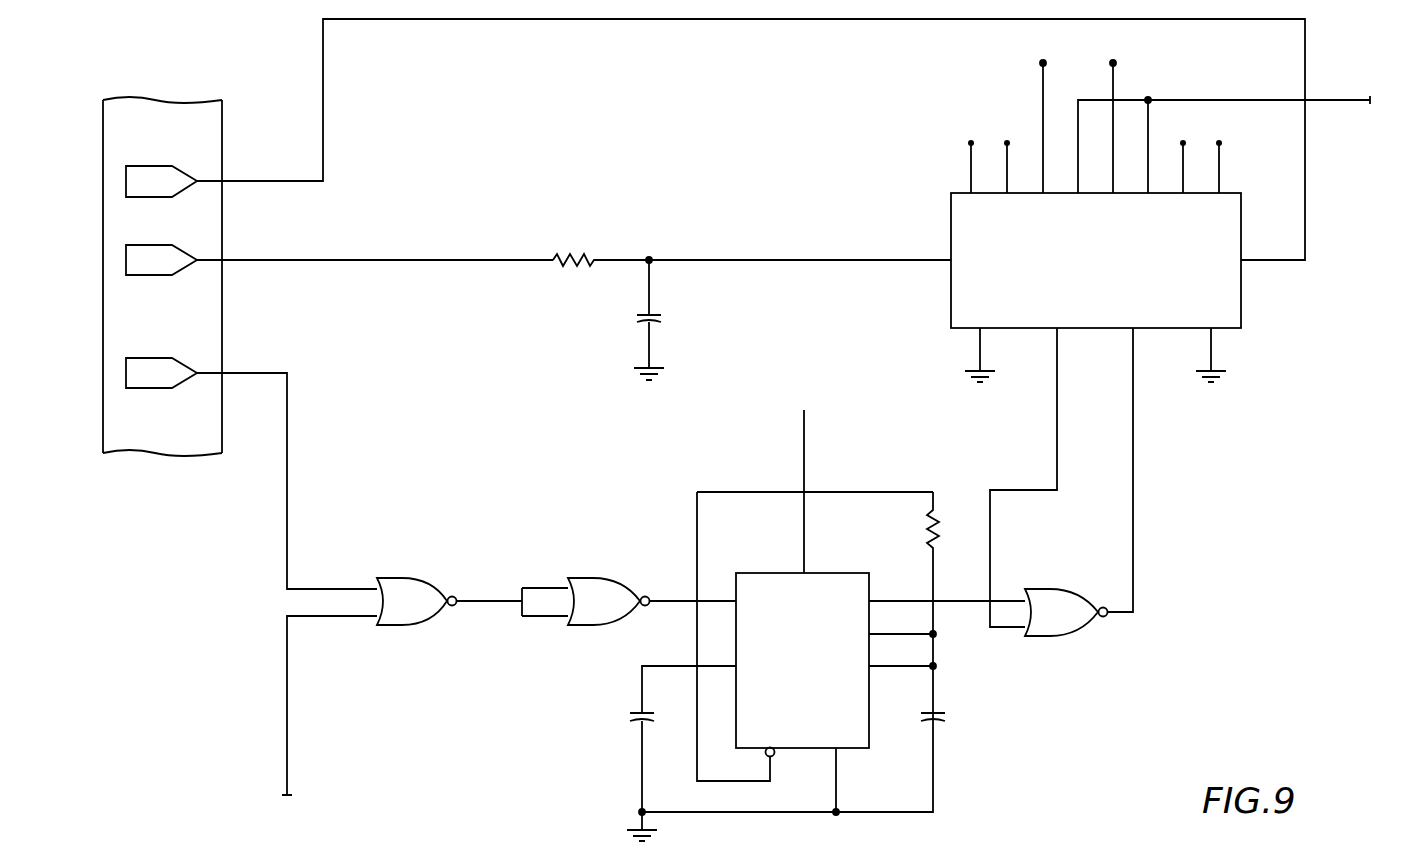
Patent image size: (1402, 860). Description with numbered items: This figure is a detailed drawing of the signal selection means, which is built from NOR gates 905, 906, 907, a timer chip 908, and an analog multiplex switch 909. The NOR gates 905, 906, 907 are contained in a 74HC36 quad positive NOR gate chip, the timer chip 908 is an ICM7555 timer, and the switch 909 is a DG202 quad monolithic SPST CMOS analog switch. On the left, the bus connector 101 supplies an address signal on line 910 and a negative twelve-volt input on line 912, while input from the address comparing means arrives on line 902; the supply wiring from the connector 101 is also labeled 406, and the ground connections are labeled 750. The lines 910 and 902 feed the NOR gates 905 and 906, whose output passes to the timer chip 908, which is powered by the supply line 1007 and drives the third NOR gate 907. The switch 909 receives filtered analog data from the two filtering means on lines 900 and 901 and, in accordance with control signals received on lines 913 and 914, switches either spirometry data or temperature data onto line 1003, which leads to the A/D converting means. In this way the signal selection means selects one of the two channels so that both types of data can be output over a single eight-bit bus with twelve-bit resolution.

The bus connector 101 is at (222, 318).
The +12V supply line 406 is at (323, 133).
The line 912 is at (529, 260).
The ground 750 is at (657, 378).
The line 901 is at (1043, 65).
The line 900 is at (1113, 65).
The line 1003 is at (1262, 100).
The analog multiplex switch 909 is at (1241, 310).
The line 910 is at (287, 490).
The line 902 is at (283, 721).
The NOR gate 905 is at (409, 575).
The NOR gate 906 is at (601, 575).
The timer chip 908 is at (760, 573).
The +5V digital supply line 1007 is at (804, 435).
The NOR gate 907 is at (1058, 636).
The line 913 is at (1057, 434).
The line 914 is at (1133, 440).